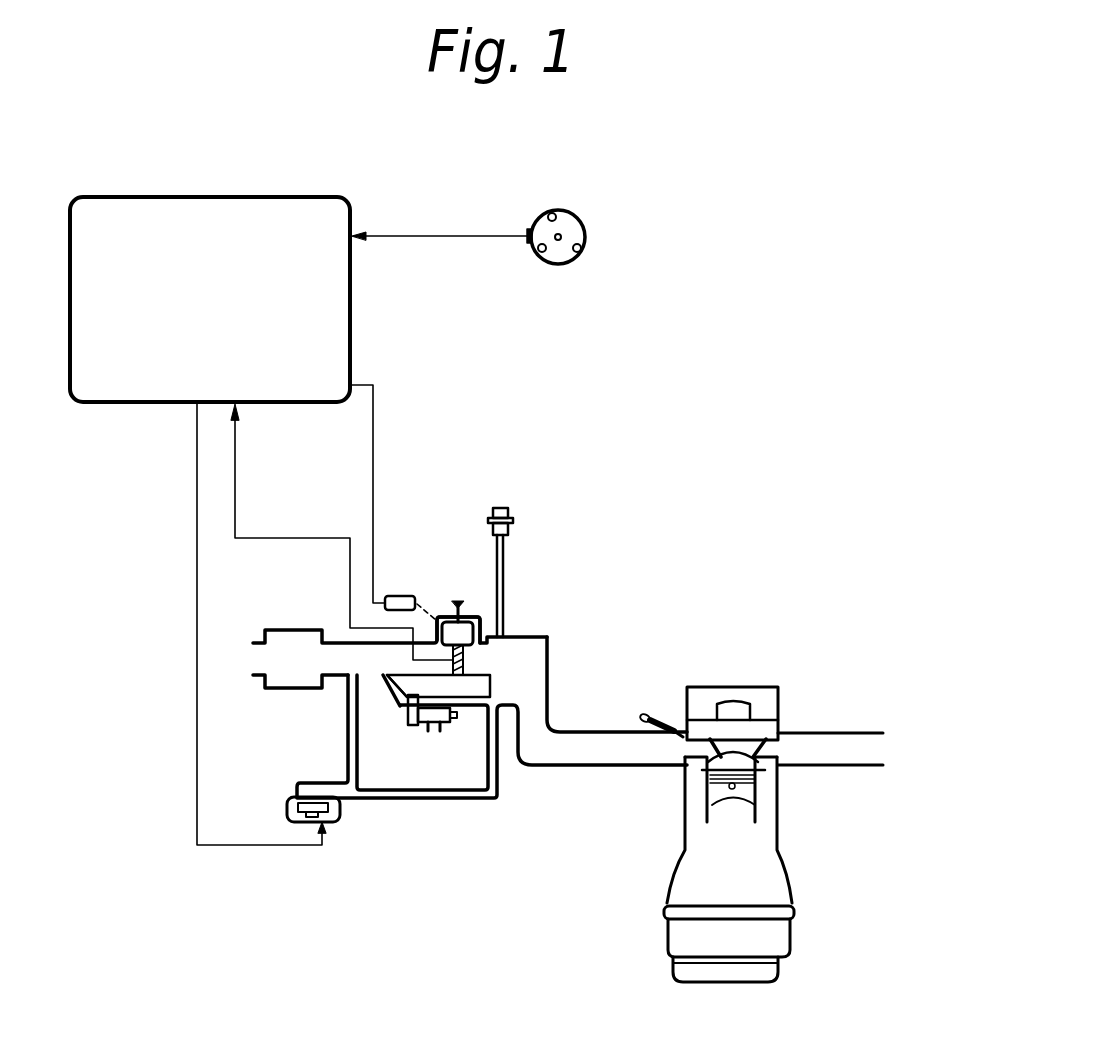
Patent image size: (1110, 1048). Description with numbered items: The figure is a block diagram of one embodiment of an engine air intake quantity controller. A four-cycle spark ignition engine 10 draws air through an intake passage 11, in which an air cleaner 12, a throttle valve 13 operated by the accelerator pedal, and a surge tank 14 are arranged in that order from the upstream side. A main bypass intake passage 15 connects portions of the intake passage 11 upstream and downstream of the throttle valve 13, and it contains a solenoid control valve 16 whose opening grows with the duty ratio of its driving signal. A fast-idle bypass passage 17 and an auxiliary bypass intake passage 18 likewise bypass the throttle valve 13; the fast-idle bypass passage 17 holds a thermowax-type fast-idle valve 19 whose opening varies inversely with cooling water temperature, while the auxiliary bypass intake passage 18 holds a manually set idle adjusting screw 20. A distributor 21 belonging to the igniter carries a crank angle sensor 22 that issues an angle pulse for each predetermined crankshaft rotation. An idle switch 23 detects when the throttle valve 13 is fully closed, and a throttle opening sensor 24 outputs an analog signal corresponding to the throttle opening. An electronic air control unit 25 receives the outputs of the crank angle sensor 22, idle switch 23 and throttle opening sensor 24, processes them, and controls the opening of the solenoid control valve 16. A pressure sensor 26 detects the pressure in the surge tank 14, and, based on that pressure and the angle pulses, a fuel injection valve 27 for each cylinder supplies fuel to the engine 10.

The engine 10 is at (779, 844).
The intake passage 11 is at (346, 649).
The air cleaner 12 is at (291, 688).
The throttle valve 13 is at (462, 652).
The surge tank 14 is at (551, 686).
The main bypass intake passage 15 is at (452, 800).
The solenoid control valve 16 is at (342, 822).
The fast-idle bypass passage 17 is at (392, 699).
The auxiliary bypass intake passage 18 is at (471, 618).
The fast-idle valve 19 is at (413, 727).
The idle adjusting screw 20 is at (457, 598).
The distributor 21 is at (586, 231).
The crank angle sensor 22 is at (530, 246).
The idle switch 23 is at (398, 592).
The throttle opening sensor 24 is at (465, 675).
The electronic air control unit 25 is at (143, 404).
The pressure sensor 26 is at (508, 504).
The fuel injection valve 27 is at (660, 712).